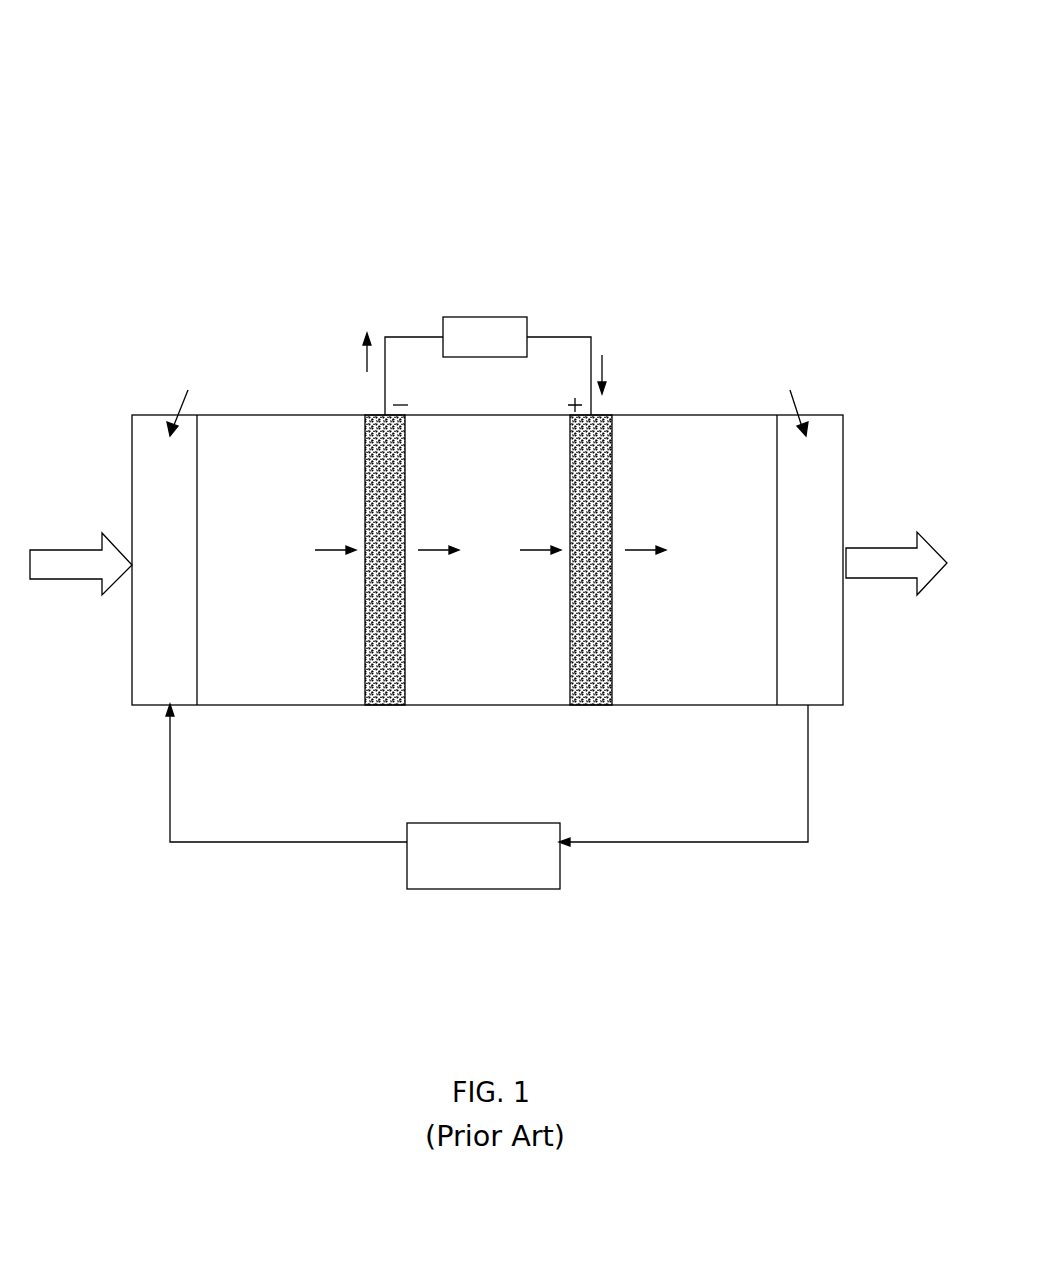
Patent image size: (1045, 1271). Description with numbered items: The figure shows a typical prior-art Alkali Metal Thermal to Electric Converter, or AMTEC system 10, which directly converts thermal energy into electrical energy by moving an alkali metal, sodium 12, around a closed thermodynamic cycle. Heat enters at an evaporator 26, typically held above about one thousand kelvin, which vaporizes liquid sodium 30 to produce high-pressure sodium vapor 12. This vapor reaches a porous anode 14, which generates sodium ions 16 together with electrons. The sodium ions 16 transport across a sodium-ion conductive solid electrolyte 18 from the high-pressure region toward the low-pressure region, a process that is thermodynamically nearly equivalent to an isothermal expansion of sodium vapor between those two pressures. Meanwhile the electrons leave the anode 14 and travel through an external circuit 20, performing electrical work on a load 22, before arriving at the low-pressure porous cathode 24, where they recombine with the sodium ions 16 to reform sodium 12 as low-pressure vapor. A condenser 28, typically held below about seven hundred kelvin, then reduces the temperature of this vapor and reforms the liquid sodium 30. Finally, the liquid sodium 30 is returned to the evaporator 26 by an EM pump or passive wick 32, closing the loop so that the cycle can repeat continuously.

The AMTEC system 10 is at (642, 168).
The sodium 12 is at (284, 532).
The porous anode 14 is at (381, 700).
The sodium ions 16 is at (484, 532).
The solid electrolyte 18 is at (483, 730).
The external circuit 20 is at (548, 338).
The load 22 is at (488, 318).
The porous cathode 24 is at (588, 700).
The evaporator 26 is at (178, 521).
The condenser 28 is at (820, 521).
The liquid sodium 30 is at (733, 846).
The EM pump or passive wick 32 is at (535, 883).